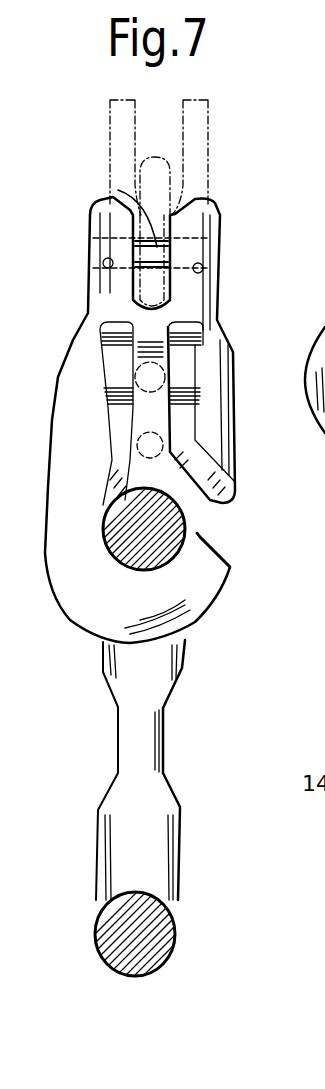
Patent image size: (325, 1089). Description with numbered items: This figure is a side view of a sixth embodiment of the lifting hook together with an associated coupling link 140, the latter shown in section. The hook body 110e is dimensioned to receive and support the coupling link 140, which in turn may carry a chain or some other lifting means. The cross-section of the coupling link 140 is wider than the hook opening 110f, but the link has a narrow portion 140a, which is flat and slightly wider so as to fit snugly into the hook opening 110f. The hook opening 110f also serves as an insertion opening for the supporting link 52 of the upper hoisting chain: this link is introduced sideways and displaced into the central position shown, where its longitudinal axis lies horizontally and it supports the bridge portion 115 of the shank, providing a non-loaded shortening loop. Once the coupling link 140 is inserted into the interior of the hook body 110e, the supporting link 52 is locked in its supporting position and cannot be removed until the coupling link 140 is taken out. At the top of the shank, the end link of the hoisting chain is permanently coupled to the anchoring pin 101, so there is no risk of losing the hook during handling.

The anchoring pin 101 is at (142, 200).
The bridge portion 115 is at (137, 320).
The supporting link 52 is at (135, 452).
The hook body 110e is at (77, 583).
The hook opening 110f is at (300, 537).
The coupling link 140 is at (127, 788).
The narrow portion 140a is at (135, 727).